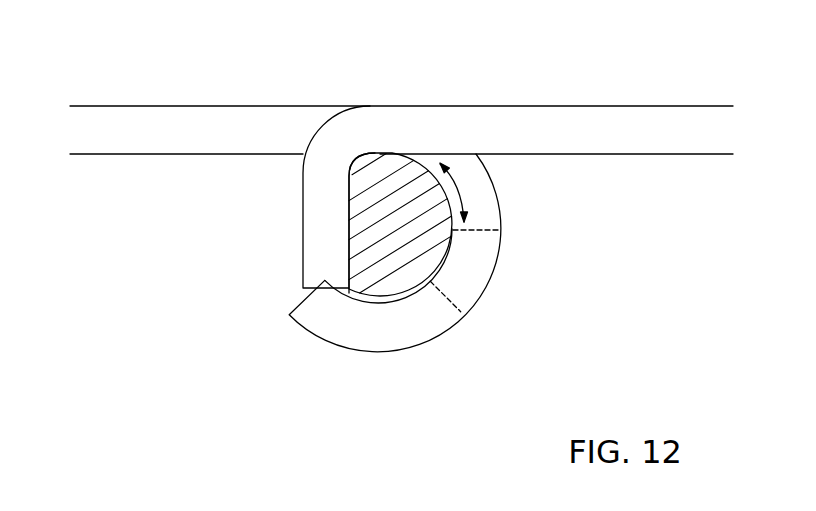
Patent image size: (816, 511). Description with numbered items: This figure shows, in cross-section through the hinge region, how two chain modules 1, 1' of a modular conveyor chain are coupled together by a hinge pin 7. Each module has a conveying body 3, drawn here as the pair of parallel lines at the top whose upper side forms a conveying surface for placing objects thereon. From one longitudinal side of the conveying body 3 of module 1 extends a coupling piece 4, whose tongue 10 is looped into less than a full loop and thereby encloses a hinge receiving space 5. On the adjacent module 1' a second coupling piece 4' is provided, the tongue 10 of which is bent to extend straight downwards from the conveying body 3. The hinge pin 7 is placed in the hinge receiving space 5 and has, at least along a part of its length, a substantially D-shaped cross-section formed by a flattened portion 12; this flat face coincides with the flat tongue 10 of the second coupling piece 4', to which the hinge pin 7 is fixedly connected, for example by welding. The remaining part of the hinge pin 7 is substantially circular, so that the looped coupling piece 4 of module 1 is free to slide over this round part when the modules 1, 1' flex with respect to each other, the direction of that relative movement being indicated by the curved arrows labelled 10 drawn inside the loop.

The chain module 1 is at (269, 52).
The chain module 1' is at (485, 53).
The conveying body 3 is at (148, 123).
The coupling piece 4 is at (430, 253).
The second coupling piece 4' is at (299, 199).
The hinge receiving space 5 is at (375, 302).
The hinge pin 7 is at (412, 243).
The tongue 10 is at (288, 191).
The flattened portion 12 is at (335, 221).